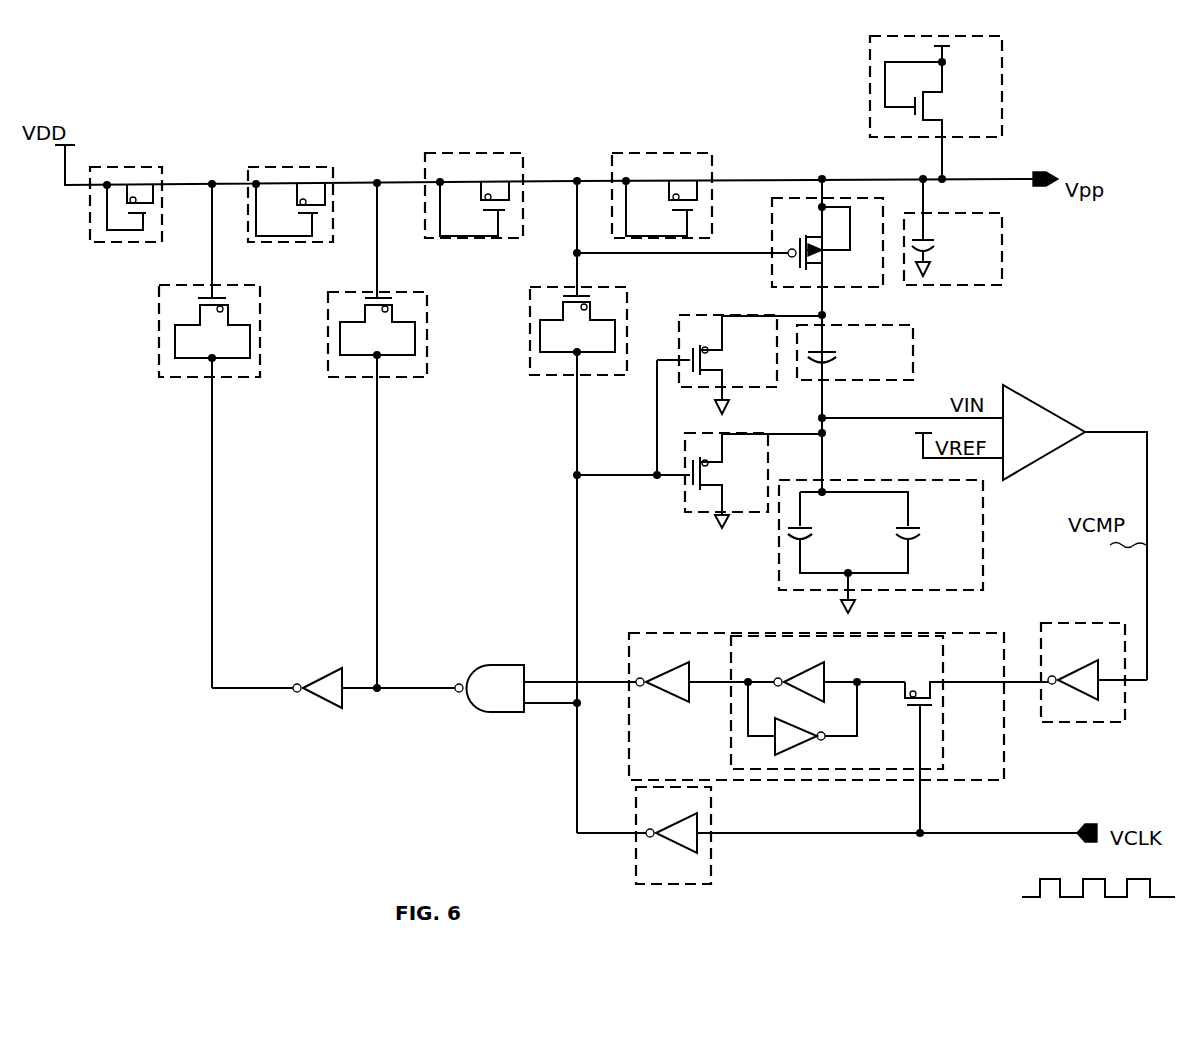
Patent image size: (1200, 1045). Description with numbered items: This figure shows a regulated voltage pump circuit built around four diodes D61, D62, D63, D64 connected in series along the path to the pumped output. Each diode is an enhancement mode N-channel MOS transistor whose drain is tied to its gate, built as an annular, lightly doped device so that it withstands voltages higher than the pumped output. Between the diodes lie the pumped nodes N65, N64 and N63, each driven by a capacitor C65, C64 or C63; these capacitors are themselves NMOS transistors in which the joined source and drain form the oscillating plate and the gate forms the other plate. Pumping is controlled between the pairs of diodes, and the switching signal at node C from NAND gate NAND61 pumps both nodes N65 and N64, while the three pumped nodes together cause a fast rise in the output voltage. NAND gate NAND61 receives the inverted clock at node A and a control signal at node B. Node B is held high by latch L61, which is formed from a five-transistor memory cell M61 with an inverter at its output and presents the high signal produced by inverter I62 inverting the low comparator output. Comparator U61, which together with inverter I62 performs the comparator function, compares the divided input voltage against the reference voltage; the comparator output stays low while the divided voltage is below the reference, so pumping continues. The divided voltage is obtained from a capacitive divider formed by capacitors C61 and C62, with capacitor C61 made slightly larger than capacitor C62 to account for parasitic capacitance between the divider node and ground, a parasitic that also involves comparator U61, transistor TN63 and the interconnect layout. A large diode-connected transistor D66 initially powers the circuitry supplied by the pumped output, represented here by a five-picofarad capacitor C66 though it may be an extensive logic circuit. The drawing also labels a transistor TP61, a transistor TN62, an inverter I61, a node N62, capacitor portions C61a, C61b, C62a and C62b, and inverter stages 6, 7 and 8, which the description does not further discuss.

The diode D61 is at (125, 167).
The diode D62 is at (287, 167).
The diode D63 is at (487, 153).
The diode D64 is at (675, 153).
The diode-connected transistor D66 is at (869, 83).
The node N65 is at (210, 183).
The node N64 is at (377, 183).
The node N63 is at (576, 180).
The node N62 is at (820, 313).
The capacitor C65 is at (159, 315).
The capacitor C64 is at (429, 318).
The capacitor C63 is at (527, 362).
The capacitor C66 is at (1003, 250).
The capacitor C61 is at (915, 345).
The capacitor plate C61a is at (828, 364).
The capacitor plate C61b is at (838, 351).
The capacitor C62 is at (985, 540).
The capacitor plate C62a is at (790, 543).
The capacitor plate C62b is at (788, 529).
The P-channel transistor TP61 is at (772, 206).
The N-channel transistor TN62 is at (692, 313).
The transistor TN63 is at (684, 500).
The comparator U61 is at (1040, 403).
The latch L61 is at (838, 735).
The 5-transistor memory cell M61 is at (979, 736).
The NAND gate NAND61 is at (498, 665).
The inverter I61 is at (713, 870).
The inverter I62 is at (325, 700).
The inverter 6 is at (989, 664).
The latch stage 7 is at (837, 702).
The inverter 8 is at (704, 688).
The node A is at (546, 707).
The node B is at (545, 681).
The node C is at (363, 686).